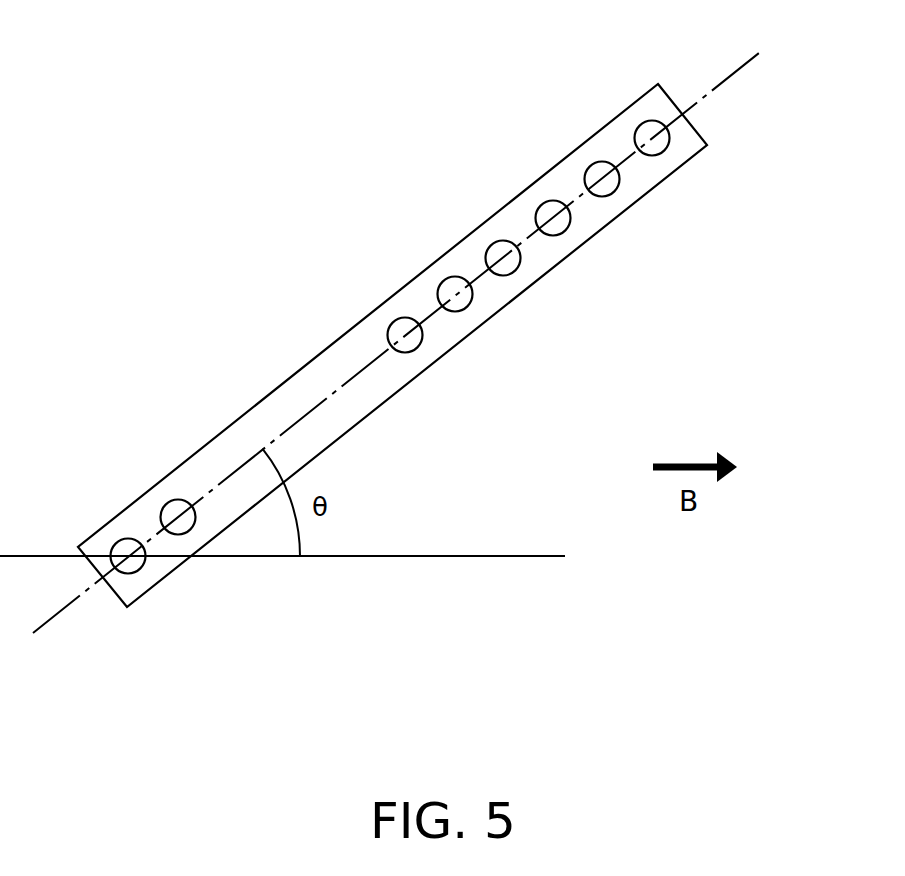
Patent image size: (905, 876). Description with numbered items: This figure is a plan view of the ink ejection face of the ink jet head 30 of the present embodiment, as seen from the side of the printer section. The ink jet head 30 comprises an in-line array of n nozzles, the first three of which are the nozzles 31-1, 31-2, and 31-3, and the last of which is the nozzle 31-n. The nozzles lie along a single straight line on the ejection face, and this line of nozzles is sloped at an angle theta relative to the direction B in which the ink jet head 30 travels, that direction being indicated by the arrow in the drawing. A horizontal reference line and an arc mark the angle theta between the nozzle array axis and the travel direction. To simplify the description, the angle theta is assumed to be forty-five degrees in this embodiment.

The ink jet head 30 is at (657, 98).
The nozzle 31-1 is at (670, 142).
The nozzle 31-2 is at (618, 188).
The nozzle 31-3 is at (568, 226).
The nozzle 31-n is at (145, 567).